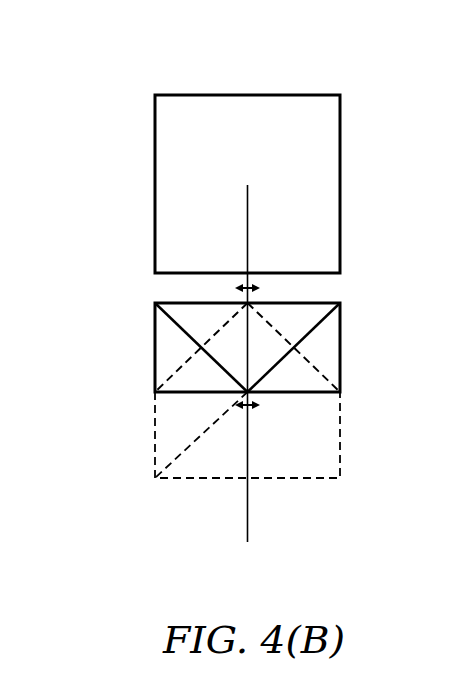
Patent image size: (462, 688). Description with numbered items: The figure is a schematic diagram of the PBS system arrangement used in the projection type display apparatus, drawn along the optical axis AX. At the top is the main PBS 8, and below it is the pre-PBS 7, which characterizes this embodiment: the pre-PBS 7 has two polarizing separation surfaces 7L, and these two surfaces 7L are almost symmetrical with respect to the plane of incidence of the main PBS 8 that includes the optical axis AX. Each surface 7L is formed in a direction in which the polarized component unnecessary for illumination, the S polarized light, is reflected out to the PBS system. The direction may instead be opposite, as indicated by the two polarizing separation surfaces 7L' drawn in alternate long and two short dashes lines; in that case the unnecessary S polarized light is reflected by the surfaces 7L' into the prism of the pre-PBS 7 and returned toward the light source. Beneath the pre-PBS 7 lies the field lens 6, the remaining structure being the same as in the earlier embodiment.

The main PBS 8 is at (288, 93).
The pre-PBS 7 is at (340, 345).
The polarizing separation surface 7L is at (246, 343).
The polarizing separation surface 7L' is at (243, 347).
The field lens 6 is at (254, 579).
The optical axis AX is at (248, 518).